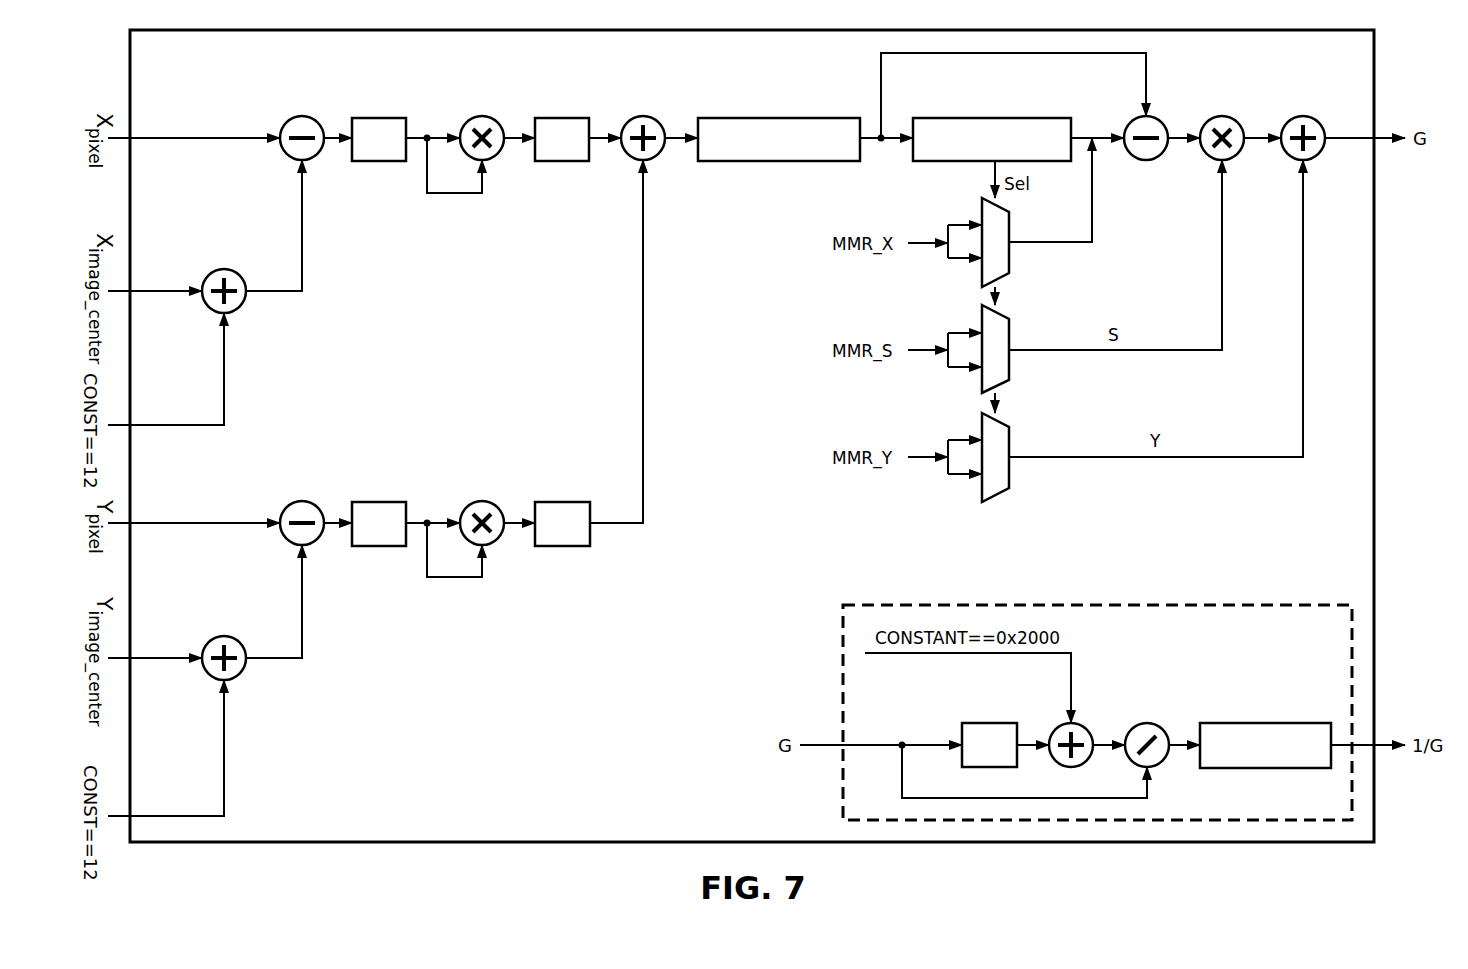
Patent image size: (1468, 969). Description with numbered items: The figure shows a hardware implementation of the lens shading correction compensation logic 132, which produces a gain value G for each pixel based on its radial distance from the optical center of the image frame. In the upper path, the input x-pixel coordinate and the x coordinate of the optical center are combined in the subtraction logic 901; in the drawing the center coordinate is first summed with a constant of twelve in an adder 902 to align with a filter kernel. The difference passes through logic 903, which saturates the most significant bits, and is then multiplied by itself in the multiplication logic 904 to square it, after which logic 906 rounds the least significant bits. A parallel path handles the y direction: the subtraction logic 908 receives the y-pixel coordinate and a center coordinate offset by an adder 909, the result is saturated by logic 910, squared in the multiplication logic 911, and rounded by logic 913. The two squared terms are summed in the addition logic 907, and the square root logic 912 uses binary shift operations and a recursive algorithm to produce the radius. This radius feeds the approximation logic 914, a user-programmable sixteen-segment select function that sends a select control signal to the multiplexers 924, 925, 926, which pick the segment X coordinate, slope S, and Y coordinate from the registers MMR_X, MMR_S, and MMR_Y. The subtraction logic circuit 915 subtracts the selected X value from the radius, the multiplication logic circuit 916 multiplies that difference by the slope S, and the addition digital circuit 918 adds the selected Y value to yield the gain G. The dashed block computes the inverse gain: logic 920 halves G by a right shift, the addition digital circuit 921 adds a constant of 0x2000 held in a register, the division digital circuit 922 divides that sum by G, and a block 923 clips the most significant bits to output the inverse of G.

The lens shading correction compensation logic 132 is at (1408, 852).
The subtraction logic 901 is at (302, 116).
The adder 902 is at (224, 269).
The bit clipping logic 903 is at (380, 118).
The multiplication logic 904 is at (482, 116).
The bit clipping logic 906 is at (561, 118).
The addition logic 907 is at (643, 116).
The subtraction logic 908 is at (302, 501).
The adder 909 is at (224, 636).
The bit clipping logic 910 is at (380, 502).
The multiplication logic 911 is at (482, 501).
The square root logic 912 is at (779, 118).
The bit clipping logic 913 is at (562, 502).
The approximation logic 914 is at (1008, 118).
The subtraction logic circuit 915 is at (1181, 102).
The multiplication logic circuit 916 is at (1227, 116).
The addition digital circuit 918 is at (1308, 116).
The division logic 920 is at (990, 723).
The addition digital circuit 921 is at (1086, 728).
The division digital circuit 922 is at (1151, 724).
The MSB clip-saturate unit 923 is at (1266, 723).
The multiplexer 924 is at (1011, 258).
The multiplexer 925 is at (1011, 366).
The multiplexer 926 is at (1011, 473).